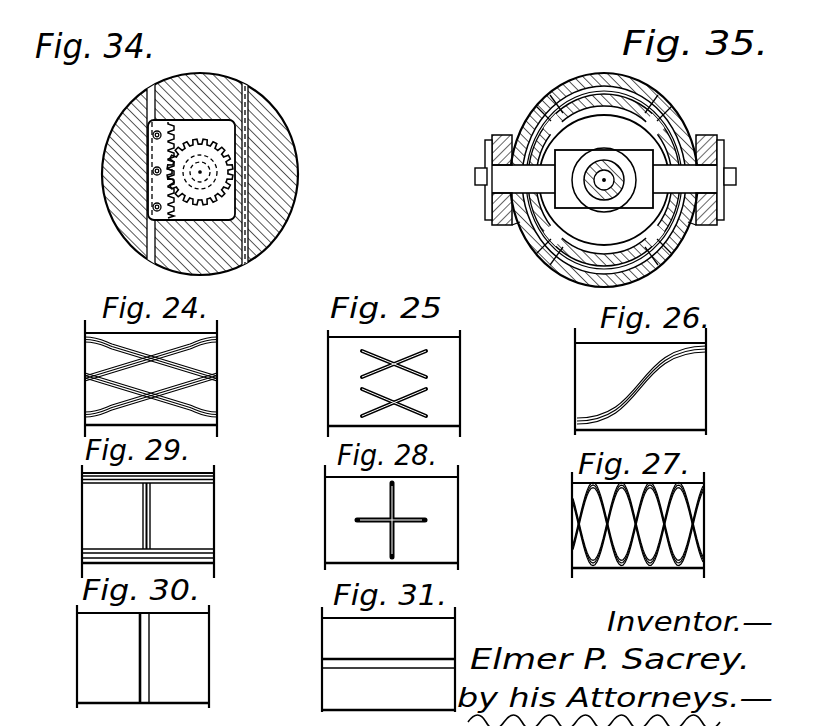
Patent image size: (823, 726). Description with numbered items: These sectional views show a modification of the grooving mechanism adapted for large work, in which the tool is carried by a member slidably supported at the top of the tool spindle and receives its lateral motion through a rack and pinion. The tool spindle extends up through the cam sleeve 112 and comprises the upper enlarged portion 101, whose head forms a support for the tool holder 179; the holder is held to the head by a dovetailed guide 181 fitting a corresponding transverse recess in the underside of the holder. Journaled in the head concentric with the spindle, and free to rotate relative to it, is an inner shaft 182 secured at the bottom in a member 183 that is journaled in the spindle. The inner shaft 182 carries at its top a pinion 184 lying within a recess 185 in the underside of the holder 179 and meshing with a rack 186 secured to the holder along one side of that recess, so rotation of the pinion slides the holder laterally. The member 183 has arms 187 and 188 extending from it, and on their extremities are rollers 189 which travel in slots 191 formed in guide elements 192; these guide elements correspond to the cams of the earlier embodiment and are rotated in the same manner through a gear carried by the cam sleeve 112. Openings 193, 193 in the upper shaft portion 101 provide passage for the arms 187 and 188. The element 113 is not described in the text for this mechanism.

In FIG. 35, the upper enlarged portion 101 is at (633, 103).
In FIG. 35, the cam sleeve 112 is at (567, 82).
In FIG. 35, the casing edge 113 is at (516, 224).
In FIG. 34, the tool holder 179 is at (108, 175).
In FIG. 34, the dovetailed guide 181 is at (247, 228).
In FIG. 34, the inner shaft 182 is at (217, 187).
In FIG. 35, the inner shaft 182 is at (611, 168).
In FIG. 35, the member 183 is at (609, 192).
In FIG. 34, the pinion 184 is at (203, 173).
In FIG. 34, the recess 185 is at (228, 130).
In FIG. 34, the rack 186 is at (157, 153).
In FIG. 35, the arm 187 is at (523, 179).
In FIG. 35, the arm 188 is at (685, 179).
In FIG. 35, the rollers 189 is at (503, 180).
In FIG. 35, the slots 191 is at (490, 150).
In FIG. 35, the guide elements 192 is at (500, 133).
In FIG. 35, the openings 193 is at (550, 133).